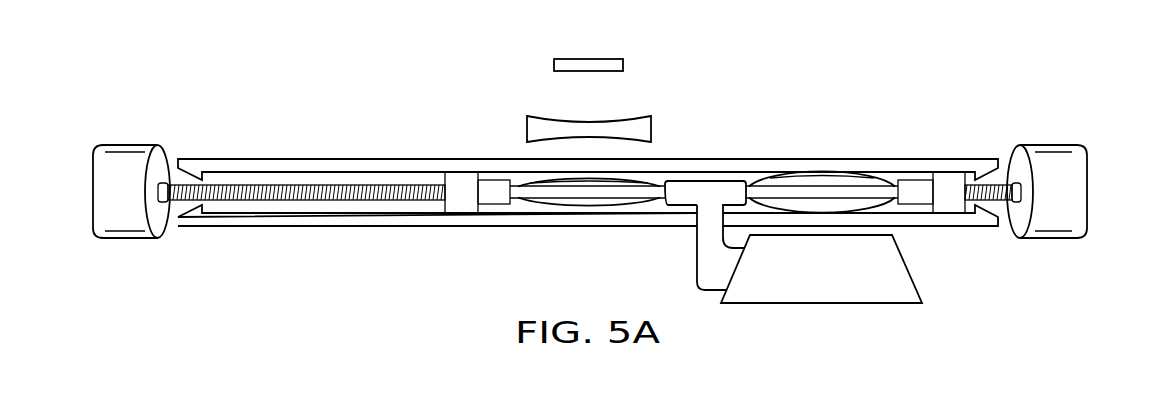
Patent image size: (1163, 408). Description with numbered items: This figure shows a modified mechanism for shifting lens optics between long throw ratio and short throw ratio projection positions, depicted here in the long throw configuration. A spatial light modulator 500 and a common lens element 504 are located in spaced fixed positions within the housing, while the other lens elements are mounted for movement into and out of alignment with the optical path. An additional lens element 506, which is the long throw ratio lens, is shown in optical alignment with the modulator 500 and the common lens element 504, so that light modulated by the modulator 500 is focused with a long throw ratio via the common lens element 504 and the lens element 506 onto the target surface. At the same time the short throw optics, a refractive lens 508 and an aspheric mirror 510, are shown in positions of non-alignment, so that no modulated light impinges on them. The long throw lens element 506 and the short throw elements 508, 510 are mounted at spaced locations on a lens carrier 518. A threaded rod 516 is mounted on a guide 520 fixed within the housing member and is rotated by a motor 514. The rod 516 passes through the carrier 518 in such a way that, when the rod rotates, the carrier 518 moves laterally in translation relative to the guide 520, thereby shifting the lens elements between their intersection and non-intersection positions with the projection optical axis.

The spatial light modulator 500 is at (554, 64).
The common lens element 504 is at (527, 130).
The additional lens element 506 is at (560, 205).
The refractive lens 508 is at (877, 172).
The aspheric mirror 510 is at (918, 287).
The motor 514 is at (1087, 180).
The threaded rod 516 is at (315, 187).
The lens carrier 518 is at (712, 179).
The guide 520 is at (265, 227).